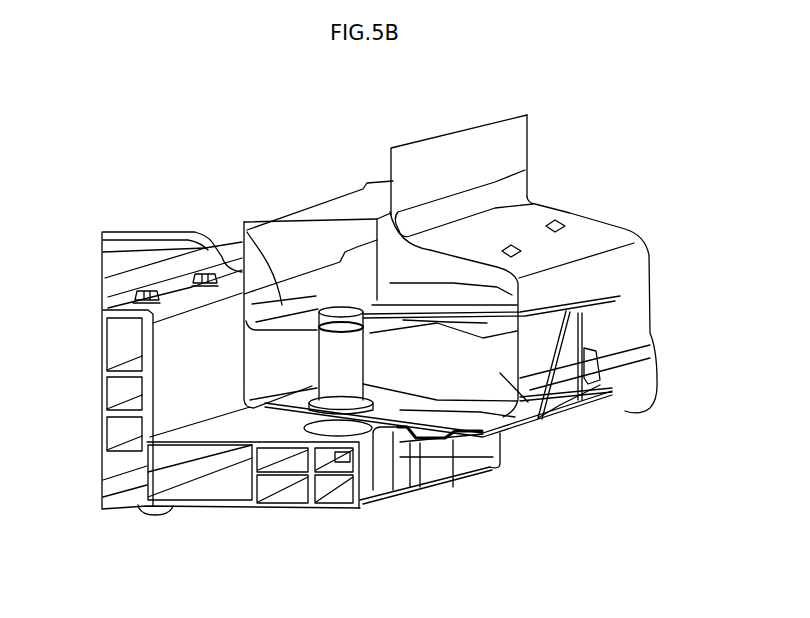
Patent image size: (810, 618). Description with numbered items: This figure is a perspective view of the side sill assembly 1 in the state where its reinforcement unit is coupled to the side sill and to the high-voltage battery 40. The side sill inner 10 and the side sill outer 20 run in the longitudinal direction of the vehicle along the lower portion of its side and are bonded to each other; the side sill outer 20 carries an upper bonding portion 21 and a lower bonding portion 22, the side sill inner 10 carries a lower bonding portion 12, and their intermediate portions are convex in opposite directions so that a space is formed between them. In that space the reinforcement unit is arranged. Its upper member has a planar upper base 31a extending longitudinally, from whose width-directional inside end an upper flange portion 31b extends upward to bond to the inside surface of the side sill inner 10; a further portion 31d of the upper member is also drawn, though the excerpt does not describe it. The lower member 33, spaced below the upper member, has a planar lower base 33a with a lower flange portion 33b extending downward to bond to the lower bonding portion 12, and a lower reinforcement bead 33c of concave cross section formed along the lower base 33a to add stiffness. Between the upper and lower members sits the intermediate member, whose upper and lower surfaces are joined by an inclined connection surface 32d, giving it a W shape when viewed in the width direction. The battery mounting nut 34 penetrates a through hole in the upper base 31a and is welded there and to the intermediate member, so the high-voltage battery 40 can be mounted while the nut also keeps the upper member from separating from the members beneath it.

The side sill assembly 1 is at (686, 80).
The side sill inner 10 is at (290, 237).
The lower bonding portion 12 is at (407, 487).
The side sill outer 20 is at (618, 244).
The upper bonding portion 21 is at (507, 148).
The lower bonding portion 22 is at (487, 456).
The upper base 31a is at (395, 297).
The upper flange portion 31b is at (247, 232).
The engaging portion 31d is at (470, 307).
The connection surface 32d is at (590, 402).
The lower member 33 is at (543, 395).
The lower base 33a is at (543, 420).
The lower flange portion 33b is at (508, 420).
The lower reinforcement bead 33c is at (435, 469).
The battery mounting nut 34 is at (328, 369).
The high-voltage battery 40 is at (210, 490).